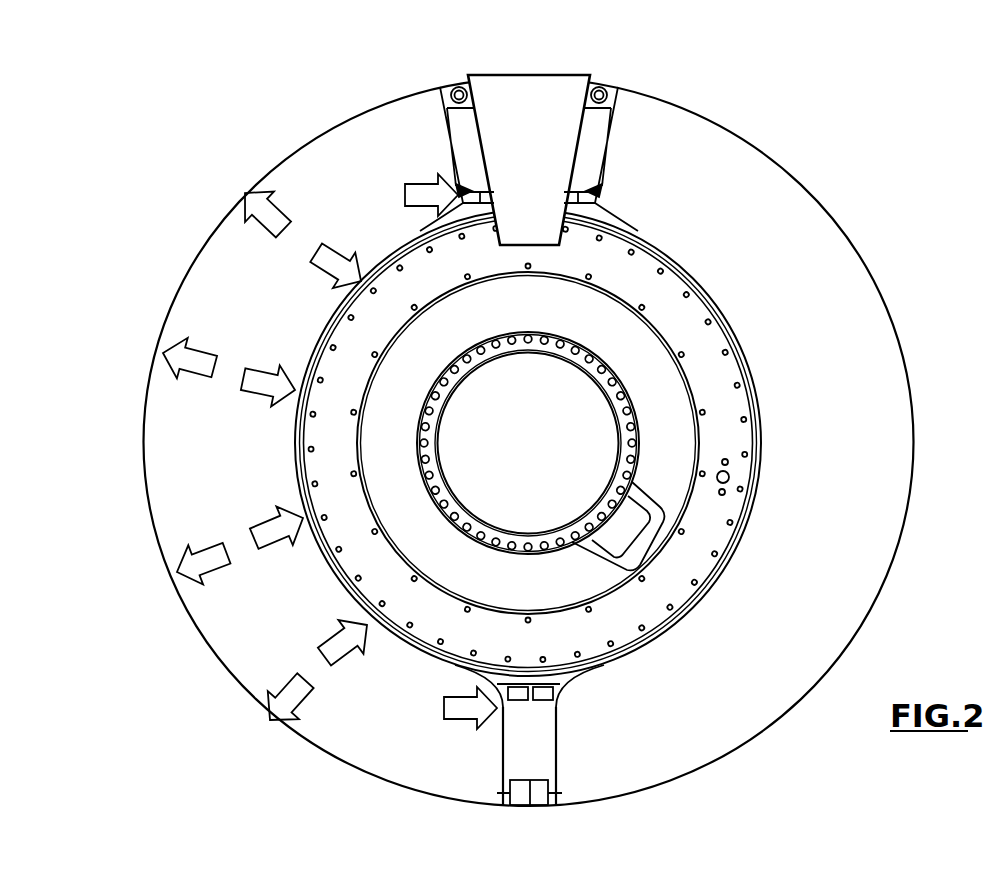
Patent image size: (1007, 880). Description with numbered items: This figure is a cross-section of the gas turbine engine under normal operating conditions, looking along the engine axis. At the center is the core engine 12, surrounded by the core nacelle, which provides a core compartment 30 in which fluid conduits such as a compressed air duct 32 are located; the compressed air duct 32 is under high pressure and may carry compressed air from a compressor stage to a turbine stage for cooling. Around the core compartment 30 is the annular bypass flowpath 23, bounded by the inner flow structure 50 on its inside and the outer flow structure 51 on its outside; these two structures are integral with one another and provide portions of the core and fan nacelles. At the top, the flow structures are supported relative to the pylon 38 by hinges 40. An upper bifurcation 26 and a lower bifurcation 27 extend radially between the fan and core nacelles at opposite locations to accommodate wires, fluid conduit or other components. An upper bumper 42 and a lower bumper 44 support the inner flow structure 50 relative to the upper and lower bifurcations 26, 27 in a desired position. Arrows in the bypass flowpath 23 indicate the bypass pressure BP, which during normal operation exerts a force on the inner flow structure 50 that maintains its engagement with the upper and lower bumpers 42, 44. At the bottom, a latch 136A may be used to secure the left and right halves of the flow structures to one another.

The core engine 12 is at (708, 362).
The bypass flowpath 23 is at (862, 477).
The upper bifurcation 26 is at (557, 228).
The lower bifurcation 27 is at (538, 749).
The core compartment 30 is at (678, 431).
The compressed air duct 32 is at (657, 540).
The pylon 38 is at (545, 151).
The hinges 40 is at (602, 86).
The upper bumper 42 is at (587, 175).
The lower bumper 44 is at (563, 690).
The inner flow structure 50 is at (648, 238).
The outer flow structure 51 is at (800, 182).
The latch 136A is at (535, 812).
The bypass pressure BP is at (390, 177).